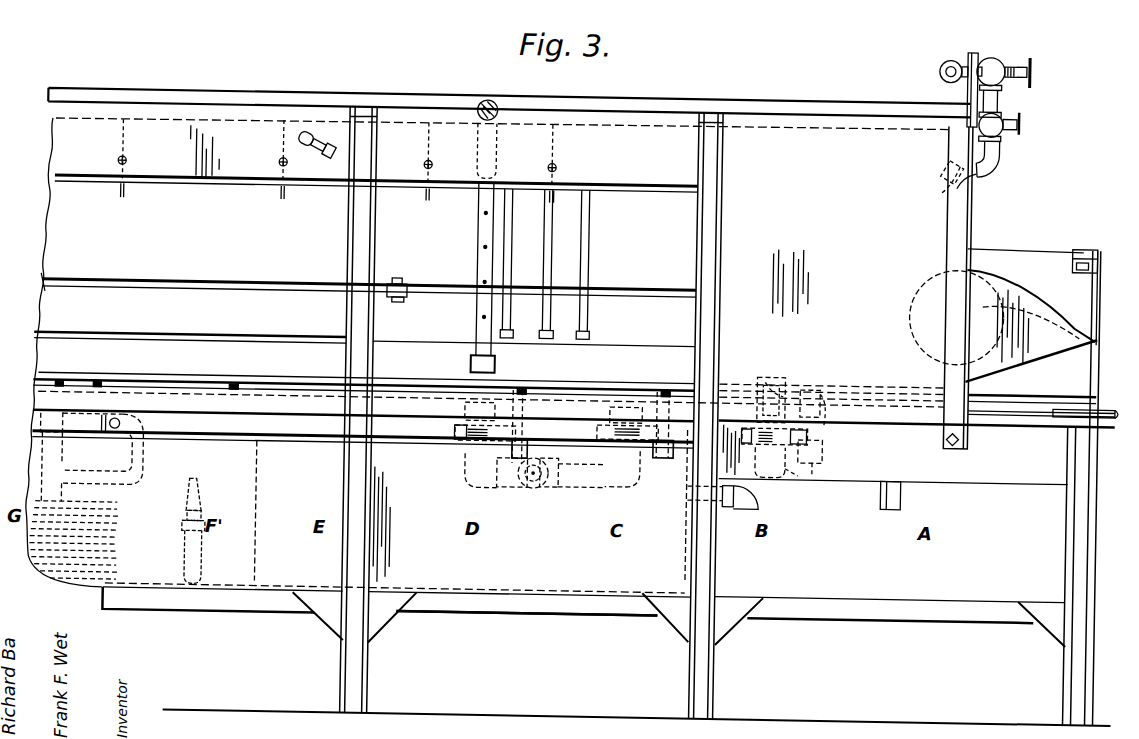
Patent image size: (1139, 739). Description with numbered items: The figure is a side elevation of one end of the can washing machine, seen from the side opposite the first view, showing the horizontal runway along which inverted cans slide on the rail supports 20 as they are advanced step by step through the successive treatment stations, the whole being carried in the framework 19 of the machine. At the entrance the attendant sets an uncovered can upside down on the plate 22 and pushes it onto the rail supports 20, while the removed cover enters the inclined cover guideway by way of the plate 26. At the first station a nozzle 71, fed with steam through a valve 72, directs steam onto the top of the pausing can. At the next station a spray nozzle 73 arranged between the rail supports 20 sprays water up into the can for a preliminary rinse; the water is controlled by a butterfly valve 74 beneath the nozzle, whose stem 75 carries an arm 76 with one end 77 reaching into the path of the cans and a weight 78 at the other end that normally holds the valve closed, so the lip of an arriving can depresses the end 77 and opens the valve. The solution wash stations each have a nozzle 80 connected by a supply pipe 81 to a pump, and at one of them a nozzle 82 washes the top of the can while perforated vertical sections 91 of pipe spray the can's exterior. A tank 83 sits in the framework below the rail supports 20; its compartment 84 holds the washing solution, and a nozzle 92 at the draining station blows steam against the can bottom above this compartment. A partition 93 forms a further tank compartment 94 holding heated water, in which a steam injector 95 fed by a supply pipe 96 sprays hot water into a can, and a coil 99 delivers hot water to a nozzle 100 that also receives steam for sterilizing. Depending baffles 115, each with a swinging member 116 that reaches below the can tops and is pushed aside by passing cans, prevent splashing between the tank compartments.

The depending baffle 115 is at (128, 138).
The swinging member 116 is at (123, 203).
The nozzle 92 is at (319, 154).
The nozzle 82 is at (496, 142).
The vertical section of pipe 91 is at (482, 236).
The nozzle 80 is at (475, 394).
The supply pipe 81 is at (536, 481).
The valve 72 is at (1010, 120).
The nozzle 71 is at (963, 164).
The plate 26 is at (1041, 316).
The plate 22 is at (1122, 396).
The rail support 20 is at (1001, 410).
The casing 19 is at (982, 461).
The spray nozzle 73 is at (772, 369).
The butterfly valve 74 is at (792, 456).
The stem 75 is at (828, 433).
The arm 76 is at (831, 413).
The end of arm 77 is at (832, 383).
The weight 78 is at (826, 449).
The nozzle 100 is at (88, 363).
The partition 93 is at (267, 488).
The tank compartment 94 is at (152, 582).
The steam injector 95 is at (194, 500).
The supply pipe 96 is at (196, 561).
The coil 99 is at (130, 531).
The tank 83 is at (480, 614).
The compartment 84 is at (563, 589).